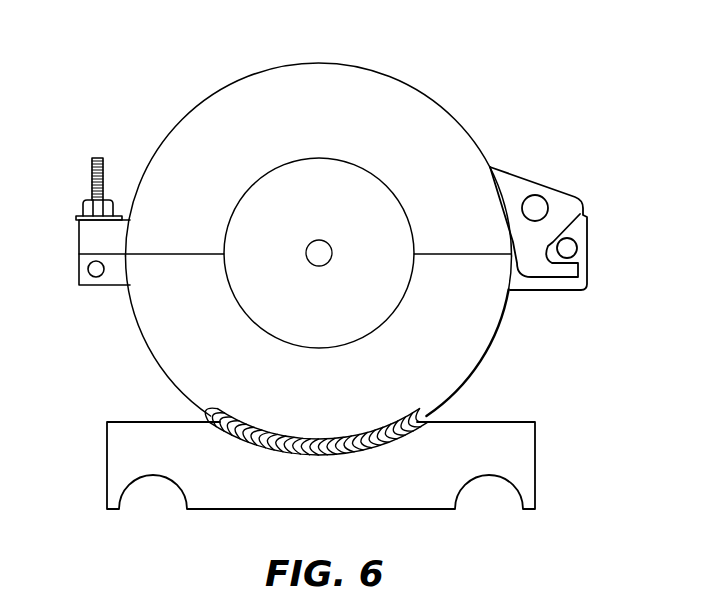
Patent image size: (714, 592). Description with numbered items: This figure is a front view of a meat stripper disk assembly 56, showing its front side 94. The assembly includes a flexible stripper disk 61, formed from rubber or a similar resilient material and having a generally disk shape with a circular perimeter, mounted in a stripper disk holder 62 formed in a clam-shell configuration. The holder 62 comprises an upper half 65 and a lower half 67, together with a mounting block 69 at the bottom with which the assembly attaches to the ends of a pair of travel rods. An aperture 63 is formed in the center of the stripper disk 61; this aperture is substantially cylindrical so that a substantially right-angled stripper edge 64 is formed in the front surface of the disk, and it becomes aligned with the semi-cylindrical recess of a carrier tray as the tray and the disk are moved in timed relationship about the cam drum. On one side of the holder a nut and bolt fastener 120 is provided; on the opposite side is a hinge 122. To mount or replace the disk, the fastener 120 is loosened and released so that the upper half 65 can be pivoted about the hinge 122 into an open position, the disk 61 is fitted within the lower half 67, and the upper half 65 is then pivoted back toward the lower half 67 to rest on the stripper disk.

The meat stripper disk assembly 56 is at (361, 47).
The stripper disk holder 62 is at (179, 92).
The front side 94 is at (466, 88).
The upper half 65 is at (452, 147).
The lower half 67 is at (480, 309).
The stripper disk 61 is at (287, 188).
The aperture 63 is at (317, 252).
The stripper edge 64 is at (332, 262).
The mounting block 69 is at (490, 440).
The nut and bolt fastener 120 is at (71, 192).
The hinge 122 is at (566, 179).